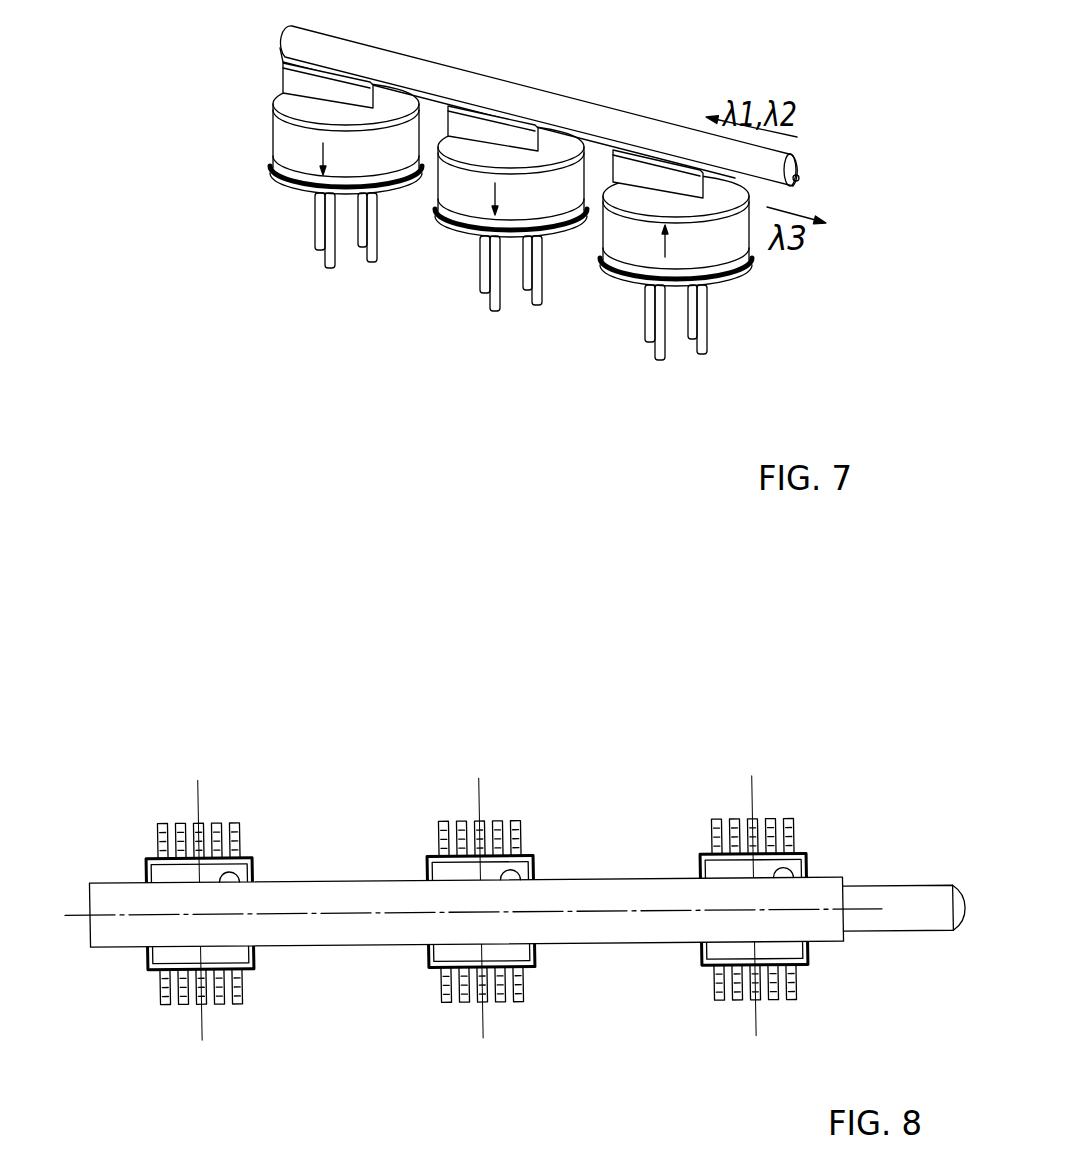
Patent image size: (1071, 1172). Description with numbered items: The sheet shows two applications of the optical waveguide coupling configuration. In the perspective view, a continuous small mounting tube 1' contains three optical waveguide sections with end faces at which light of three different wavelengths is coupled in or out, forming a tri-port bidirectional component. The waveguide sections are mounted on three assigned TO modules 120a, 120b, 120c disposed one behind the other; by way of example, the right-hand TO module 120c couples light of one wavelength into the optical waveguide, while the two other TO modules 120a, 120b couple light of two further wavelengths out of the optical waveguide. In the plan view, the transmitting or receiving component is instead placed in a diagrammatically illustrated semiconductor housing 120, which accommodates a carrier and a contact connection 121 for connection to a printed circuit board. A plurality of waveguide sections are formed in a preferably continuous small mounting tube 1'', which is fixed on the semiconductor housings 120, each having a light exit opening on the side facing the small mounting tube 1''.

In FIG. 7, the small mounting tube 1' is at (539, 106).
In FIG. 7, the TO module 120a is at (304, 194).
In FIG. 7, the TO module 120b is at (457, 237).
In FIG. 7, the TO module 120c is at (733, 273).
In FIG. 8, the small mounting tube 1'' is at (514, 880).
In FIG. 8, the semiconductor housing 120 is at (534, 958).
In FIG. 8, the contact connection 121 is at (522, 819).